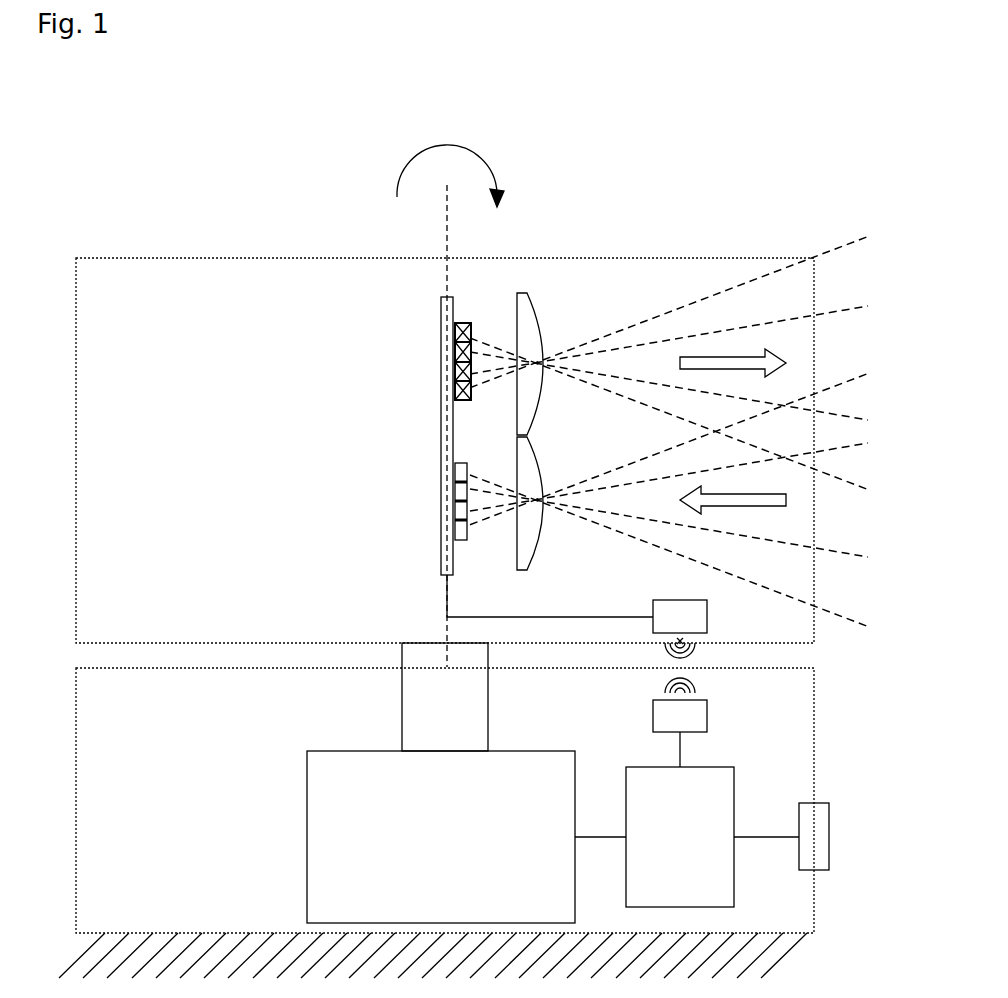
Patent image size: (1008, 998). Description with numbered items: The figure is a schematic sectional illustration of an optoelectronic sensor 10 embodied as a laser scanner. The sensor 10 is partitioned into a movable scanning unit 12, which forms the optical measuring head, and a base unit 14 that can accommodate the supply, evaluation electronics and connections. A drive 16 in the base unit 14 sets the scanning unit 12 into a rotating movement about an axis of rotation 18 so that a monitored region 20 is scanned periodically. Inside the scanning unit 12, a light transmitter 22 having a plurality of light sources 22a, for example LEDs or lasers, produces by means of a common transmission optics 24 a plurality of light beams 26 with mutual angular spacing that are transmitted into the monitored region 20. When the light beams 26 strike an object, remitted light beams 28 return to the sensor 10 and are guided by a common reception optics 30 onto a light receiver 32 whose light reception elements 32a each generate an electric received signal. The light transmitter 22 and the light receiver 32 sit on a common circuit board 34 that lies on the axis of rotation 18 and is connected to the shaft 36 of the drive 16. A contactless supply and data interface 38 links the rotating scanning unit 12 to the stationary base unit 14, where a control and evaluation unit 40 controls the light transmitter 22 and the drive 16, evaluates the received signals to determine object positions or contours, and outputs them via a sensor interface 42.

The optoelectronic sensor 10 is at (729, 181).
The scanning unit 12 is at (409, 440).
The base unit 14 is at (408, 807).
The drive 16 is at (401, 837).
The axis of rotation 18 is at (434, 406).
The monitored region 20 is at (784, 335).
The light transmitter 22 is at (422, 361).
The light sources 22a is at (663, 363).
The transmission optics 24 is at (555, 354).
The light beams 26 is at (874, 335).
The remitted light beams 28 is at (877, 529).
The reception optics 30 is at (554, 514).
The light receiver 32 is at (420, 501).
The light reception elements 32a is at (661, 500).
The circuit board 34 is at (500, 457).
The shaft 36 is at (407, 697).
The contactless supply and data interface 38 is at (633, 683).
The control and evaluation unit 40 is at (679, 847).
The sensor interface 42 is at (812, 864).